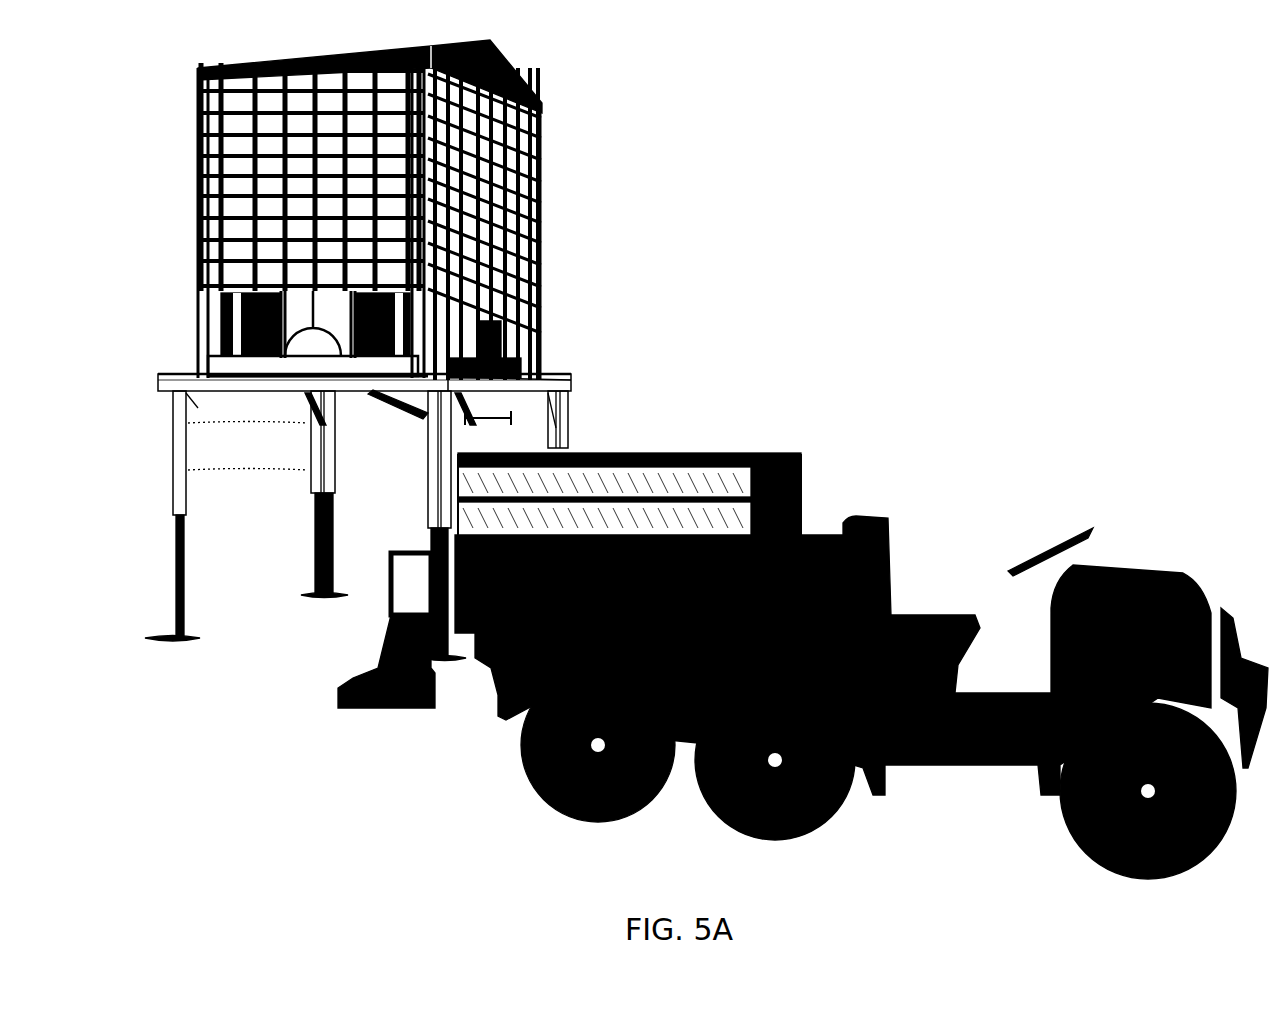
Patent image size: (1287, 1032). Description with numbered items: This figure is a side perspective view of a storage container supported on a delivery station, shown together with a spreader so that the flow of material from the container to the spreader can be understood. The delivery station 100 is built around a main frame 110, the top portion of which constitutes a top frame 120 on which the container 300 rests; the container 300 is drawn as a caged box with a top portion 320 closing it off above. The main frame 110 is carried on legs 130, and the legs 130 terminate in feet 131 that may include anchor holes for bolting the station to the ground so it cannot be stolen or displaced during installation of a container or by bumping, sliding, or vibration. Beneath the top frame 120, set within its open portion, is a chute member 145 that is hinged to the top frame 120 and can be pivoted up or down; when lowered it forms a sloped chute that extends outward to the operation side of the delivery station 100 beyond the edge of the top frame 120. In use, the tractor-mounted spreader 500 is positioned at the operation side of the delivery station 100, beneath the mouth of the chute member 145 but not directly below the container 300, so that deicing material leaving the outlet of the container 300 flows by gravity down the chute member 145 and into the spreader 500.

The delivery station 100 is at (592, 357).
The main frame 110 is at (563, 373).
The top frame 120 is at (183, 365).
The legs 130 is at (177, 573).
The feet 131 is at (150, 633).
The chute member 145 is at (410, 417).
The container 300 is at (562, 125).
The cage top 320 is at (523, 82).
The tractor-mounted spreader 500 is at (790, 450).